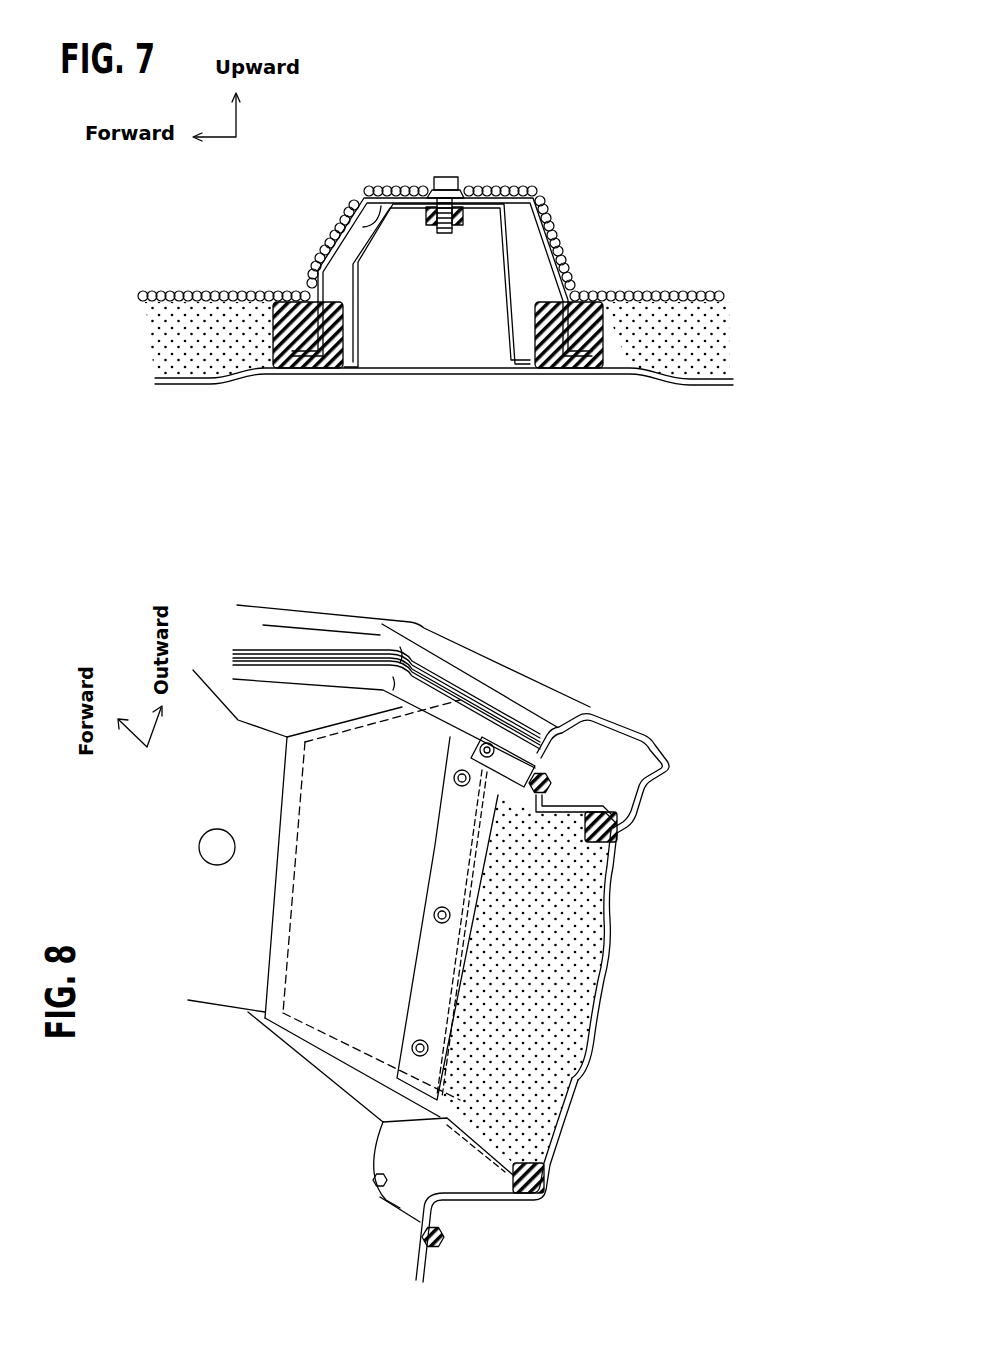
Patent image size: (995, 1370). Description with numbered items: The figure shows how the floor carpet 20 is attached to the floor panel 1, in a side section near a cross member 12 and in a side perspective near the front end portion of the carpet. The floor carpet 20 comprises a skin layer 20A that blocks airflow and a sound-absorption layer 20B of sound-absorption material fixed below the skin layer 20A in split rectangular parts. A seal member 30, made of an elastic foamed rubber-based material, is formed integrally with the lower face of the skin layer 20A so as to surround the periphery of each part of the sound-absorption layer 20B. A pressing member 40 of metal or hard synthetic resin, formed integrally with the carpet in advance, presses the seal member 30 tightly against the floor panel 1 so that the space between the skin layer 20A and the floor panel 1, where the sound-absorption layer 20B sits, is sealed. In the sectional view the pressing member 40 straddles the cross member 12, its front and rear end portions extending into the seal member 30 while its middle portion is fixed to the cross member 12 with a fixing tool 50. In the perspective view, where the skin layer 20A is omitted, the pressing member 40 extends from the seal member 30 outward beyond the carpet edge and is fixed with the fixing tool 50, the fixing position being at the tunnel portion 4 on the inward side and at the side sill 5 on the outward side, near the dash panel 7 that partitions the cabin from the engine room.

In FIG. 7, the floor panel 1 is at (230, 388).
In FIG. 8, the floor panel 1 is at (598, 1048).
In FIG. 8, the tunnel portion 4 is at (480, 1203).
In FIG. 8, the side sill 5 is at (547, 700).
In FIG. 8, the dash panel 7 is at (233, 992).
In FIG. 7, the cross member 12 is at (510, 297).
In FIG. 7, the floor carpet 20 is at (706, 152).
In FIG. 7, the skin layer 20A is at (553, 225).
In FIG. 7, the sound-absorption layer 20B is at (673, 323).
In FIG. 8, the sound-absorption layer 20B is at (588, 933).
In FIG. 7, the seal member 30 is at (328, 370).
In FIG. 8, the seal member 30 is at (620, 830).
In FIG. 7, the pressing member 40 is at (378, 203).
In FIG. 8, the pressing member 40 is at (512, 762).
In FIG. 7, the fixing tool 50 is at (444, 180).
In FIG. 8, the fixing tool 50 is at (560, 785).